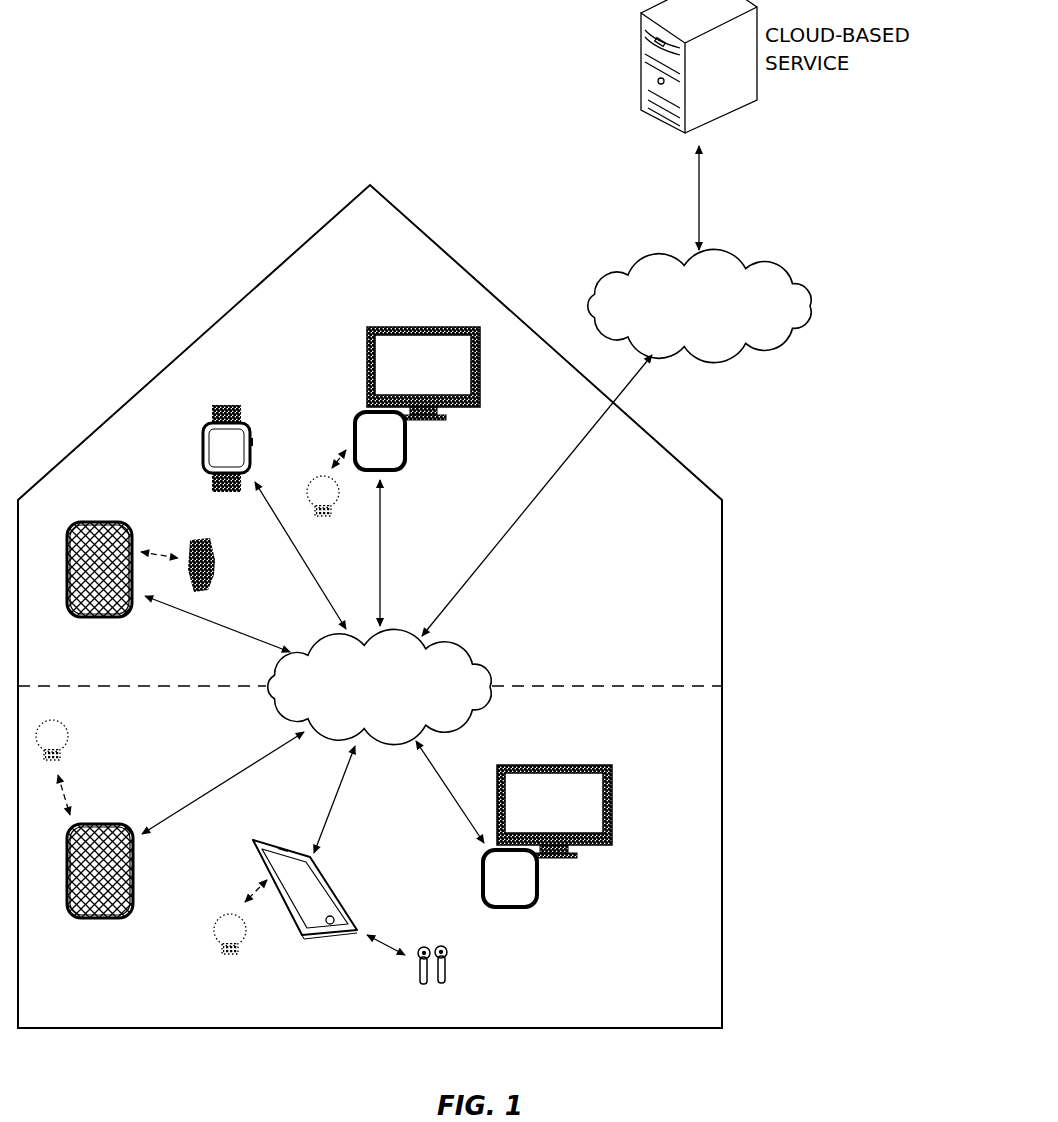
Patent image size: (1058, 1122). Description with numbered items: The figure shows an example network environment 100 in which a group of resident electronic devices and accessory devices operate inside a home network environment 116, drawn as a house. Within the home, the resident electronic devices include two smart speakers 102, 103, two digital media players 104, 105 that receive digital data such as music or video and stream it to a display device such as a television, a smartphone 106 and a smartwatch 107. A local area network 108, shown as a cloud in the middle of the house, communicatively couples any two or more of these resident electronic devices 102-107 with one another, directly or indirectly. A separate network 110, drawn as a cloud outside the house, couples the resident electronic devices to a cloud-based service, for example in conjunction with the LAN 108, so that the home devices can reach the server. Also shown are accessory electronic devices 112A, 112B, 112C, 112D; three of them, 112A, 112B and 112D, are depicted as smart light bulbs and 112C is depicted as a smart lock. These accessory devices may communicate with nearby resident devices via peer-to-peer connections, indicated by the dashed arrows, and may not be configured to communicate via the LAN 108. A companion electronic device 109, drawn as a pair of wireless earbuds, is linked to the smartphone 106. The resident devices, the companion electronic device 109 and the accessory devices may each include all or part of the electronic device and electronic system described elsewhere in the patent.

The network environment 100 is at (104, 95).
The resident electronic device 102 is at (92, 824).
The resident electronic device 103 is at (120, 522).
The resident electronic device 104 is at (538, 890).
The resident electronic device 105 is at (405, 445).
The resident electronic device 106 is at (340, 886).
The resident electronic device 107 is at (257, 442).
The local area network 108 is at (494, 660).
The companion electronic device 109 is at (455, 955).
The network 110 is at (800, 268).
The accessory electronic device 112A is at (70, 732).
The accessory electronic device 112B is at (325, 522).
The accessory electronic device 112C is at (216, 560).
The accessory electronic device 112D is at (240, 962).
The home network environment 116 is at (240, 292).